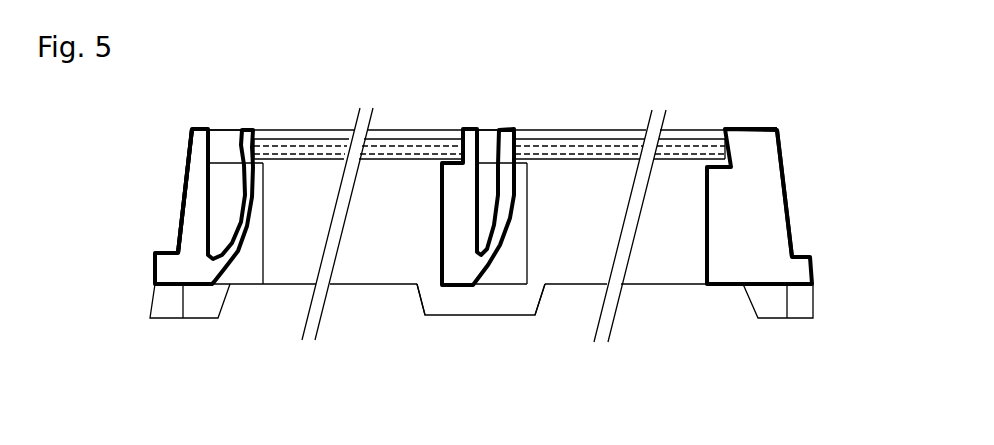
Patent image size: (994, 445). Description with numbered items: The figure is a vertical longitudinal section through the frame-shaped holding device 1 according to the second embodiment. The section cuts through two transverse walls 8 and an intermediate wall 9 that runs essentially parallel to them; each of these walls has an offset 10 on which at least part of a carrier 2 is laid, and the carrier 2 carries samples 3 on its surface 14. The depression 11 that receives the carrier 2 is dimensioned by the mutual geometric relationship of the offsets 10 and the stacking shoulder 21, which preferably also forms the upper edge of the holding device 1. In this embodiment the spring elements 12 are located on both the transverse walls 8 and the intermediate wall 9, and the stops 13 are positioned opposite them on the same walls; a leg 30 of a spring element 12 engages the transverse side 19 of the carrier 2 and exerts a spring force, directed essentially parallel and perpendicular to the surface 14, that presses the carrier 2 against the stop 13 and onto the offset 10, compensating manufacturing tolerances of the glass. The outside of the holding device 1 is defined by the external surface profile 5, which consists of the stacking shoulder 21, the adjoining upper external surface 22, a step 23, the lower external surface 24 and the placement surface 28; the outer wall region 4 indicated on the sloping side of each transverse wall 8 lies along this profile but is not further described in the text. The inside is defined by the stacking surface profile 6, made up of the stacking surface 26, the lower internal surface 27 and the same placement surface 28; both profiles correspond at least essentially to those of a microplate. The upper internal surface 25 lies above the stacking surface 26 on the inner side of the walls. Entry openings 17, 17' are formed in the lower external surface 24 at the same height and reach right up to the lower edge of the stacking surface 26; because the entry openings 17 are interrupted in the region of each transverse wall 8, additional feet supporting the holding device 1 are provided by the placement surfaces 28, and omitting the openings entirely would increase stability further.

The holding device 1 is at (82, 145).
The carrier 2 is at (398, 148).
The samples 3 is at (489, 112).
The surface of the carrier 14 is at (489, 112).
The trench 4 is at (182, 208).
The external surface profile 5 is at (100, 237).
The stacking surface profile 6 is at (276, 348).
The transverse wall 8 is at (183, 276).
The intermediate wall 9 is at (453, 226).
The offset 10 is at (602, 138).
The depression 11 is at (489, 112).
The spring element 12 is at (415, 207).
The leg of the spring element 30 is at (256, 193).
The stop 13 is at (465, 128).
The entry opening 17 is at (491, 348).
The entry opening 17' is at (495, 348).
The transverse side of the carrier 19 is at (250, 127).
The stacking shoulder 21 is at (192, 126).
The upper external surface 22 is at (185, 182).
The step 23 is at (153, 253).
The lower external surface 24 is at (147, 290).
The upper internal surface 25 is at (377, 251).
The stacking surface 26 is at (213, 291).
The lower internal surface 27 is at (184, 313).
The placement surface 28 is at (165, 322).